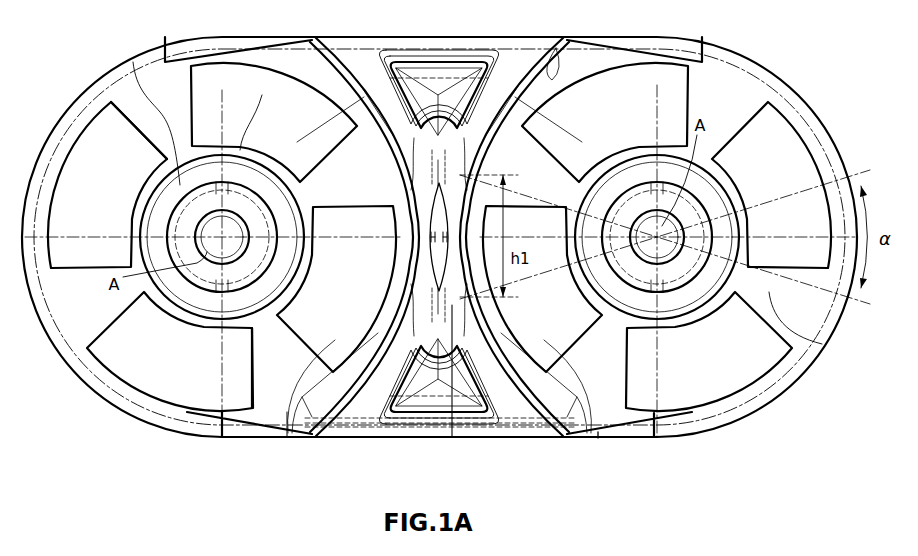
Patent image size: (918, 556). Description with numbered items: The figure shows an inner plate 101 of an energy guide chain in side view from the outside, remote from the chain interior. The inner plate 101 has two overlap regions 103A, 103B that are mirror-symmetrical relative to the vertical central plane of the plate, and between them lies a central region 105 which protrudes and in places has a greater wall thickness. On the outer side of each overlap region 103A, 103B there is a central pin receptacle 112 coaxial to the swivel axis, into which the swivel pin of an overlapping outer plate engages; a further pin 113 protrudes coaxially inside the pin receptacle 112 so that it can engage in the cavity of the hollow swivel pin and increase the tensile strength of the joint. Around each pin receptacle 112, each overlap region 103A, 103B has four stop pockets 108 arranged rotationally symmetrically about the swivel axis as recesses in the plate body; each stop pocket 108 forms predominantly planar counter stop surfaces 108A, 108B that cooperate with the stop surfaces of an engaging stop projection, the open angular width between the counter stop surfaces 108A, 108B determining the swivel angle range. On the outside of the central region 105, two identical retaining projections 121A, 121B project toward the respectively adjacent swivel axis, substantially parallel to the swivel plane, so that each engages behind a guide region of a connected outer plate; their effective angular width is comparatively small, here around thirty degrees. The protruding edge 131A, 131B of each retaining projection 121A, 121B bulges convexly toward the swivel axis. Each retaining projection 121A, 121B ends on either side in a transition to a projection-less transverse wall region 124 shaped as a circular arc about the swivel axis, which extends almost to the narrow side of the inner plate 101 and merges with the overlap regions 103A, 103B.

The inner plate 101 is at (80, 58).
The overlap region 103A is at (58, 360).
The overlap region 103B is at (778, 58).
The central region 105 is at (512, 35).
The stop pocket 108 is at (146, 359).
The counter stop surface 108A is at (119, 330).
The counter stop surface 108B is at (245, 374).
The pin receptacle 112 is at (133, 62).
The pin 113 is at (262, 95).
The retaining projection 121A is at (287, 437).
The retaining projection 121B is at (452, 437).
The transverse wall region 124 is at (565, 40).
The protruding edge 131A is at (409, 198).
The protruding edge 131B is at (470, 195).